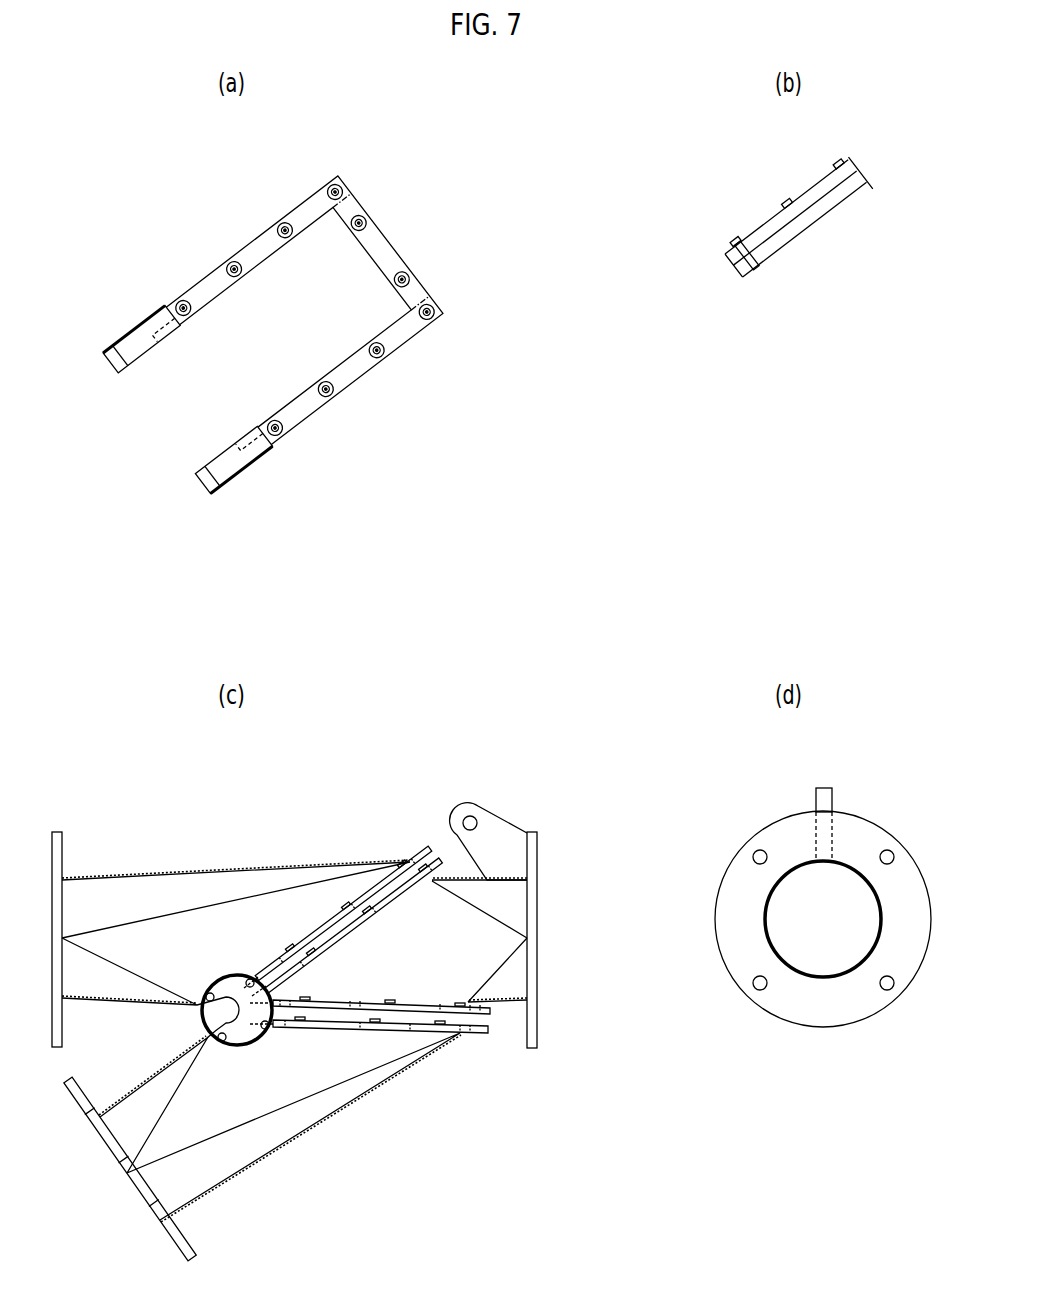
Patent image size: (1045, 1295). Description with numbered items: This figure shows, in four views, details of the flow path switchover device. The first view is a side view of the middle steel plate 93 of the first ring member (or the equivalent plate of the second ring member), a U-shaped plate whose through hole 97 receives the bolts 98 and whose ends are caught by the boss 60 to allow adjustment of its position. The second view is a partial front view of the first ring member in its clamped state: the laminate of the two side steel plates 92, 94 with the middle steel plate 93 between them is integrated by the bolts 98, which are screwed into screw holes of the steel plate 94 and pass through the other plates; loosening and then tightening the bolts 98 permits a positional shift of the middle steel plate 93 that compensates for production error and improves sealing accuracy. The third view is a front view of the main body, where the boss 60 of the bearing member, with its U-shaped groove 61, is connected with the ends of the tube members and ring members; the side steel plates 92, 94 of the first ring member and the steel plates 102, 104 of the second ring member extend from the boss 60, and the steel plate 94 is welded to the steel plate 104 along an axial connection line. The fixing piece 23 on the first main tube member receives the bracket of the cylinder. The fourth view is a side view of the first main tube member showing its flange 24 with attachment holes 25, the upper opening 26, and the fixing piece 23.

The fixing piece 23 is at (493, 825).
The flange 24 is at (752, 898).
The attachment holes 25 is at (758, 980).
The upper opening 26 is at (818, 947).
The boss 60 is at (143, 340).
The U-shaped groove 61 is at (207, 1027).
The side steel plate 92 is at (767, 230).
The middle steel plate 93 is at (343, 380).
The side steel plate 94 is at (840, 205).
The through hole 97 is at (436, 311).
The bolts 98 is at (742, 242).
The steel plate 102 is at (465, 1035).
The steel plate 104 is at (480, 1014).